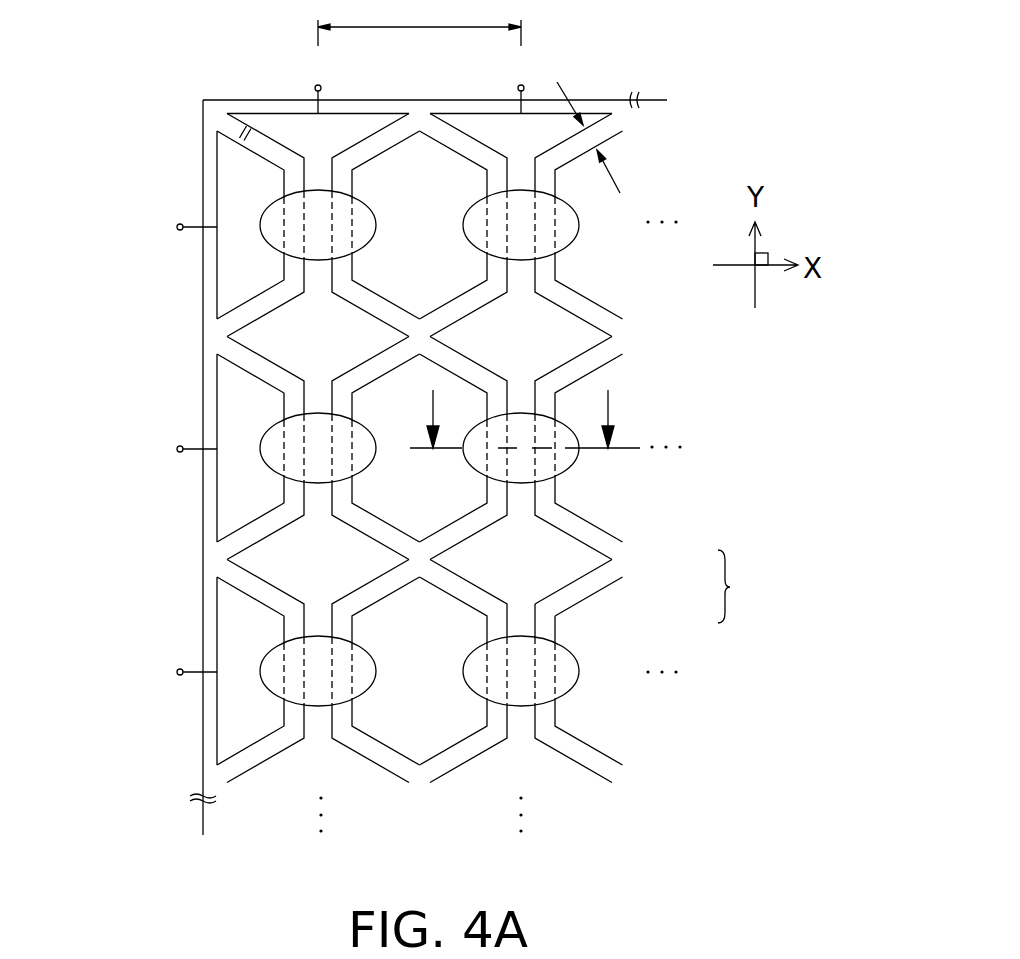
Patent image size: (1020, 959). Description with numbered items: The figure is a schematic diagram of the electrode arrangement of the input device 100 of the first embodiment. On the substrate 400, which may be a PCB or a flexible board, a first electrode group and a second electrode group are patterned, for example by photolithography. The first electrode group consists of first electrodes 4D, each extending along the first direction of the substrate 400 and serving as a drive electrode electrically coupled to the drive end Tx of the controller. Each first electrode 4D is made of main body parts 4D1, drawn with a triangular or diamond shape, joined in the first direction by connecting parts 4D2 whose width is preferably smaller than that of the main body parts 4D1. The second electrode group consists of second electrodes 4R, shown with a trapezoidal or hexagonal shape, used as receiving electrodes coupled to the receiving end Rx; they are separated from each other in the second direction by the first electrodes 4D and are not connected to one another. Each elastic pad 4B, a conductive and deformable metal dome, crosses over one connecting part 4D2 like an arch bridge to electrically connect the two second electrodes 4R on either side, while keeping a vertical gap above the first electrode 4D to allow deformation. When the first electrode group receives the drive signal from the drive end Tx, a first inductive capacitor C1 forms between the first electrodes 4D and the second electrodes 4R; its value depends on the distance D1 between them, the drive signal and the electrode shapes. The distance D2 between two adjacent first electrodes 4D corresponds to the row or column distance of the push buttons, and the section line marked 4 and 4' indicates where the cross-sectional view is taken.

The input device 100 is at (99, 63).
The substrate 400 is at (203, 555).
The first electrode 4D is at (270, 114).
The main body part 4D1 is at (588, 560).
The connecting part 4D2 is at (527, 616).
The second electrode 4R is at (217, 177).
The elastic pad 4B is at (261, 231).
The first inductive capacitor C1 is at (240, 133).
The drive end Tx is at (423, 86).
The receiving end Rx is at (178, 450).
The distance between first and second electrodes D1 is at (588, 132).
The distance between adjacent first electrodes D2 is at (419, 23).
The section line start 4 is at (524, 419).
The section line end 4' is at (620, 419).